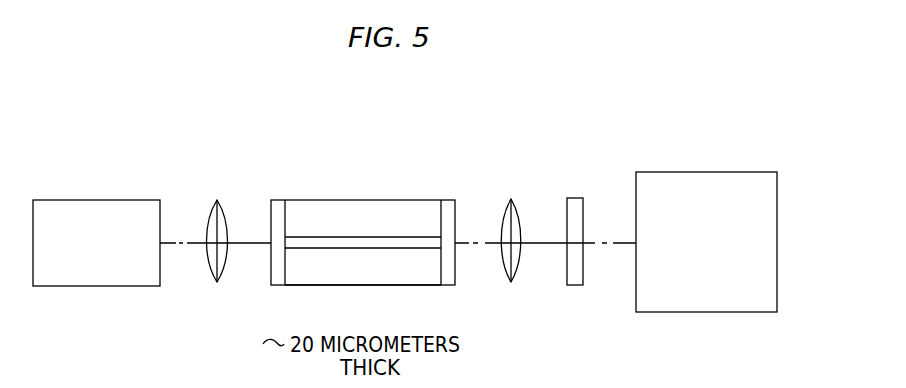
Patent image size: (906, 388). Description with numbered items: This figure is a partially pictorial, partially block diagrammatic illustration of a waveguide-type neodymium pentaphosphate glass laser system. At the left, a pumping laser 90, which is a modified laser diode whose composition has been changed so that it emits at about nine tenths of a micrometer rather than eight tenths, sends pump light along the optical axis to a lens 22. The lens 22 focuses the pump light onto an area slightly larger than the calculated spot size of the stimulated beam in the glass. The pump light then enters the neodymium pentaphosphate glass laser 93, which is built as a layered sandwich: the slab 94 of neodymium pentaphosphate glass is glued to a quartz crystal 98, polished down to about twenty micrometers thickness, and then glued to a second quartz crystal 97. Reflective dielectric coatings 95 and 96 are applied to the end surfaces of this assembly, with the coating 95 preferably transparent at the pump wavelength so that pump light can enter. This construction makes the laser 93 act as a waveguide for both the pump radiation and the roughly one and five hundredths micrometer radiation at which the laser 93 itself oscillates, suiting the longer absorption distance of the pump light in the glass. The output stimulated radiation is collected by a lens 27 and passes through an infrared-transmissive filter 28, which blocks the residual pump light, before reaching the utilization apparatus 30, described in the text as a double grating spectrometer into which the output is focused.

The pumping laser 90 is at (100, 286).
The lens 22 is at (218, 283).
The neodymium pentaphosphate glass laser 93 is at (338, 131).
The reflective dielectric coating 95 is at (281, 199).
The reflective dielectric coating 96 is at (449, 199).
The second quartz crystal 97 is at (353, 204).
The slab of neodymium pentaphosphate glass 94 is at (361, 244).
The quartz crystal 98 is at (432, 283).
The lens 27 is at (516, 282).
The infrared-transmissive filter 28 is at (576, 286).
The utilization apparatus 30 is at (703, 312).